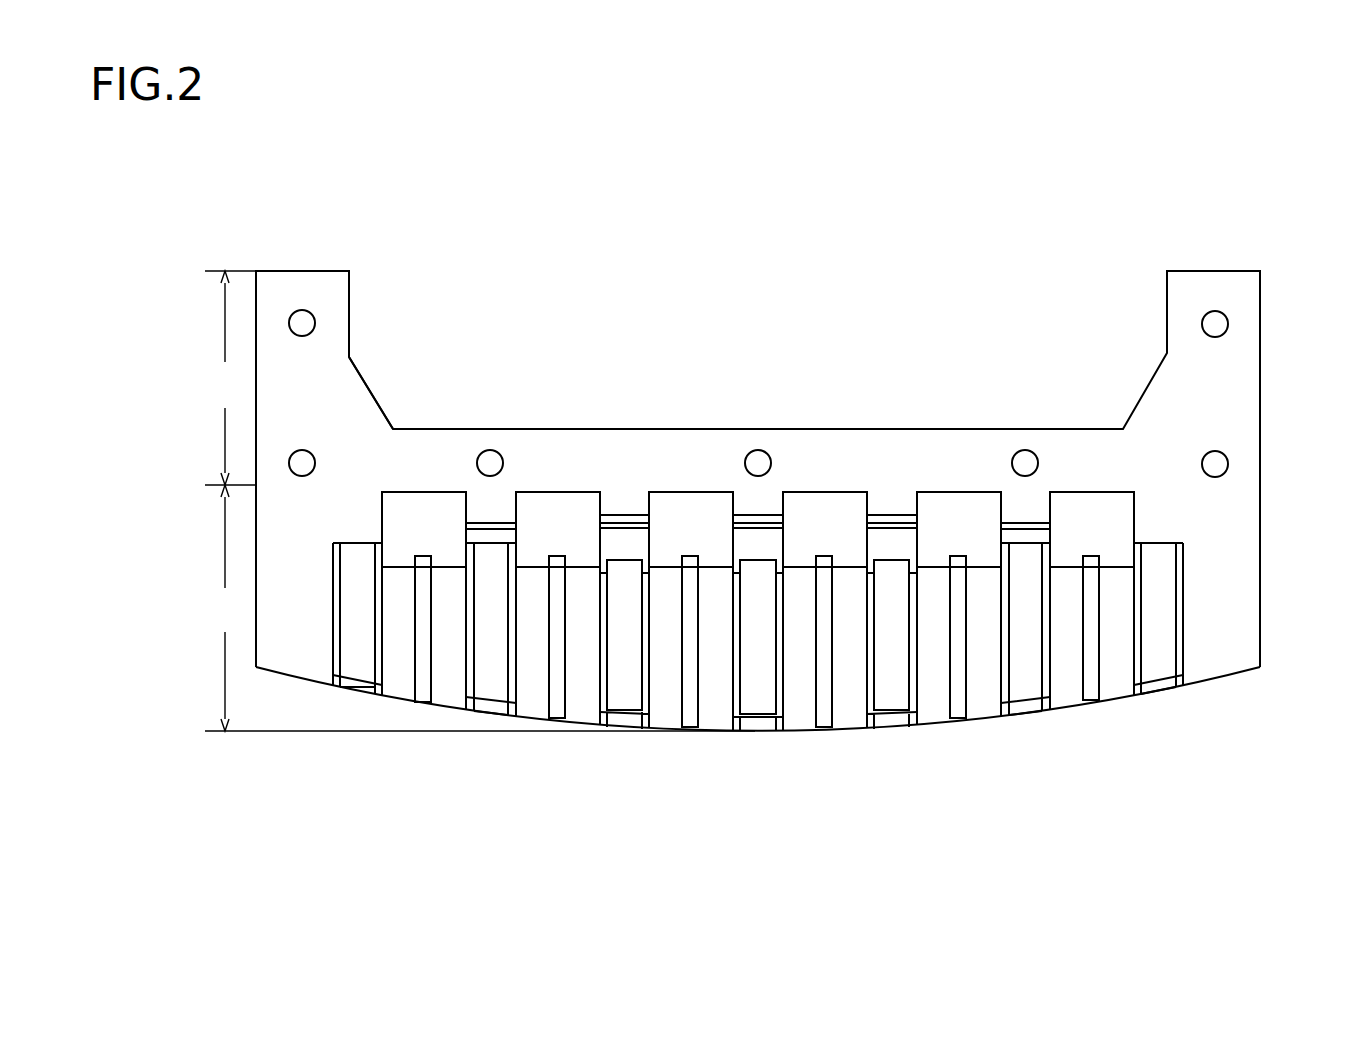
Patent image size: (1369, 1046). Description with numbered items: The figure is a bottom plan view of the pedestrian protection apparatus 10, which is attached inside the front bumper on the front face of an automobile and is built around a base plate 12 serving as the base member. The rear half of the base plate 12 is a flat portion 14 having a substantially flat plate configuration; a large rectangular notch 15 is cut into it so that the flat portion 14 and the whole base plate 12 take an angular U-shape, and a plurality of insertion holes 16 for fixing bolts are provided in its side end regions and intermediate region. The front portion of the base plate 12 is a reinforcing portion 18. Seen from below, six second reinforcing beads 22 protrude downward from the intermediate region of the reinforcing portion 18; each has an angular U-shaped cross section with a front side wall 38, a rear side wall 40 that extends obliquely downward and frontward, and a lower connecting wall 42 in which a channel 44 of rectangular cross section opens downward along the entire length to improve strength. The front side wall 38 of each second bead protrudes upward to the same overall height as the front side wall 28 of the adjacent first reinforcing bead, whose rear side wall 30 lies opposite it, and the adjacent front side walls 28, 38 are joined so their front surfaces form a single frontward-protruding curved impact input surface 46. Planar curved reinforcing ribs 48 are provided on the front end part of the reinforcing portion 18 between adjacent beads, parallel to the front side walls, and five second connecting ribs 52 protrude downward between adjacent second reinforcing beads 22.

The pedestrian protection apparatus 10 is at (1085, 763).
The base plate 12 is at (1265, 414).
The flat portion 14 is at (230, 378).
The notch 15 is at (355, 358).
The insertion holes 16 is at (311, 313).
The reinforcing portion 18 is at (480, 608).
The second reinforcing beads 22 is at (380, 637).
The front side wall of first reinforcing bead 28 is at (360, 695).
The rear side wall of first reinforcing bead 30 is at (630, 547).
The front side wall of second reinforcing bead 38 is at (425, 705).
The rear side wall of second reinforcing bead 40 is at (442, 520).
The lower connecting wall 42 is at (398, 588).
The channel 44 is at (425, 597).
The impact input surface 46 is at (720, 735).
The reinforcing ribs 48 is at (500, 703).
The second connecting ribs 52 is at (502, 522).